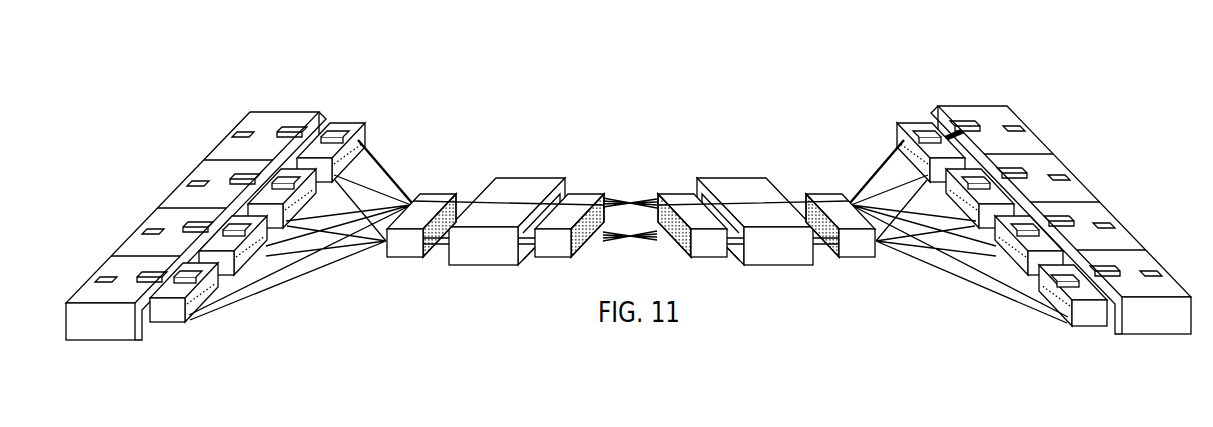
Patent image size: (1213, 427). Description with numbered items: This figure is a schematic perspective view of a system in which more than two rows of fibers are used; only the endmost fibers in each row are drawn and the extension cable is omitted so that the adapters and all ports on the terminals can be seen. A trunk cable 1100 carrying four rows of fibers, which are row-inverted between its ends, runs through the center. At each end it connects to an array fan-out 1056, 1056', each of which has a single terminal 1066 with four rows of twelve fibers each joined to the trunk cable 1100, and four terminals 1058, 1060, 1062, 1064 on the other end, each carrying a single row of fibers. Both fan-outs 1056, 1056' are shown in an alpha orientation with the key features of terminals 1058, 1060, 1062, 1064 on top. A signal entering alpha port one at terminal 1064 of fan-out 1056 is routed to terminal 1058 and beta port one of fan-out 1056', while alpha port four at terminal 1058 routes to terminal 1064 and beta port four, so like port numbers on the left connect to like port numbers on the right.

The array fan-out 1056 is at (391, 158).
The array fan-out 1056' is at (848, 164).
The terminal 1058 is at (188, 278).
The terminal 1060 is at (247, 232).
The terminal 1062 is at (295, 177).
The terminal 1064 is at (345, 128).
The terminal 1066 is at (405, 253).
The trunk cable 1100 is at (628, 200).